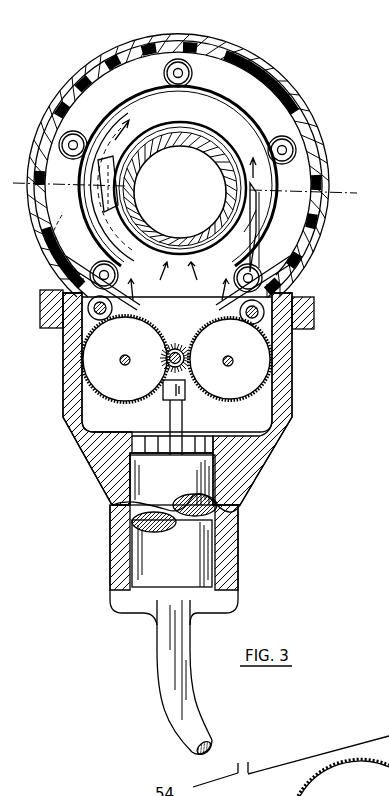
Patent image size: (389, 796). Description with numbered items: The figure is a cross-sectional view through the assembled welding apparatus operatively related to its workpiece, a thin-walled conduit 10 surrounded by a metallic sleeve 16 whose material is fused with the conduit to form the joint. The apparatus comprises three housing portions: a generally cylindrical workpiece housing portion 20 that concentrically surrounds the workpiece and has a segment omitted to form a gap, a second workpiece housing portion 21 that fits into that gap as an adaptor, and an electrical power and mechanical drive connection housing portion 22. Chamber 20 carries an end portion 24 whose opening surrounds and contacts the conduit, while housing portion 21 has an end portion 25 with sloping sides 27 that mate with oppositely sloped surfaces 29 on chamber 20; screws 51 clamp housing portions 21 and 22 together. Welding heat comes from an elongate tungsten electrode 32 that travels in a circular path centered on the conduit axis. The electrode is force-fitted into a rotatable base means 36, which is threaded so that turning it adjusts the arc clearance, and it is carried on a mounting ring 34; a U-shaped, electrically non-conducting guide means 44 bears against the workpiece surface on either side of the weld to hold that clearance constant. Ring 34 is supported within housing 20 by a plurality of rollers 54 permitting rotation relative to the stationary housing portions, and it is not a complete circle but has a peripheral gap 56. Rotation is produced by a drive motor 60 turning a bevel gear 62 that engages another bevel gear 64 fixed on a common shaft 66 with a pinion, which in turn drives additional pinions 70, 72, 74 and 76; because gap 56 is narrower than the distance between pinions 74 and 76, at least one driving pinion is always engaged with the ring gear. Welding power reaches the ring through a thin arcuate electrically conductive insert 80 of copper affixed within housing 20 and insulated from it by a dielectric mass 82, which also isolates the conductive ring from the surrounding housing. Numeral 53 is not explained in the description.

The thin-walled conduit 10 is at (215, 143).
The metallic sleeve 16 is at (198, 122).
The workpiece housing portion 20 is at (300, 86).
The workpiece housing portion 21 is at (44, 338).
The electrical power and mechanical drive connection housing portion 22 is at (252, 500).
The end portion 24 is at (320, 134).
The end portion 25 is at (248, 213).
The sloping sides 27 is at (252, 233).
The surfaces 29 is at (240, 234).
The tungsten electrode 32 is at (100, 183).
The mounting ring 34 is at (230, 85).
The rotatable base means 36 is at (131, 163).
The guide means 44 is at (118, 218).
The screws 51 is at (314, 315).
The pivot axis 53 is at (62, 205).
The rollers 54 is at (176, 62).
The peripheral gap 56 is at (178, 295).
The drive motor 60 is at (140, 506).
The bevel gear 62 is at (165, 386).
The bevel gear 64 is at (163, 348).
The common shaft 66 is at (185, 366).
The pinion 70 is at (240, 388).
The pinion 72 is at (110, 386).
The pinion 74 is at (216, 320).
The pinion 76 is at (136, 290).
The arcuate electrically conductive insert 80 is at (128, 62).
The dielectric mass 82 is at (290, 268).